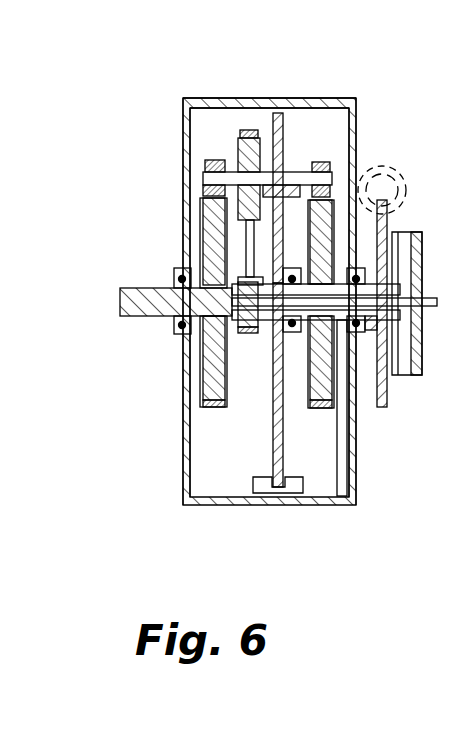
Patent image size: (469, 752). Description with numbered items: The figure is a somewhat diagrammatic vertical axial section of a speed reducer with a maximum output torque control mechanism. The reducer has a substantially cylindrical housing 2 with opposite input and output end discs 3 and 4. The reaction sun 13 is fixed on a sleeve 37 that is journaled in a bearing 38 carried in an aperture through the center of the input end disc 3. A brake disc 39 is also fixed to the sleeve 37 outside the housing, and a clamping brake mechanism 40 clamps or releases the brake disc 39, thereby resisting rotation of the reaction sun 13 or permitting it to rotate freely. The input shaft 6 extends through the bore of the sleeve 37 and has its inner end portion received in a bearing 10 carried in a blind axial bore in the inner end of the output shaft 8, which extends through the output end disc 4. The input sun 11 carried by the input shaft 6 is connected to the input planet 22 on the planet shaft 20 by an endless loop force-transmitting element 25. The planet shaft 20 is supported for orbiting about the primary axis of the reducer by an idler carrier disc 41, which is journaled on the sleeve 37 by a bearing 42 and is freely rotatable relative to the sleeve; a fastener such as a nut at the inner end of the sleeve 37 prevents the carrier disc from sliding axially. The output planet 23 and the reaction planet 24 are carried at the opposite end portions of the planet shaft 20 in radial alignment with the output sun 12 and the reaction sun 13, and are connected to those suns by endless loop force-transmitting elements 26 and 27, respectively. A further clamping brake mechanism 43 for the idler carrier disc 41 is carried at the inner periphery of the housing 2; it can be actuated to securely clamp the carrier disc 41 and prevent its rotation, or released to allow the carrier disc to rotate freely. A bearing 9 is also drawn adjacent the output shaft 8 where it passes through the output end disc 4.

The housing 2 is at (307, 94).
The input end disc 3 is at (352, 136).
The output end disc 4 is at (183, 122).
The input shaft 6 is at (438, 308).
The output shaft 8 is at (120, 310).
The bearing 9 is at (180, 324).
The bearing 10 is at (240, 327).
The input sun 11 is at (265, 337).
The output sun 12 is at (203, 376).
The reaction sun 13 is at (316, 392).
The planet shaft 20 is at (238, 160).
The input planet 22 is at (278, 154).
The output planet 23 is at (207, 166).
The reaction planet 24 is at (325, 166).
The endless loop force-transmitting element 25 is at (255, 132).
The endless loop force-transmitting element 26 is at (207, 197).
The endless loop force-transmitting element 27 is at (335, 425).
The sleeve 37 is at (393, 352).
The bearing 38 is at (364, 330).
The brake disc 39 is at (388, 228).
The clamping brake mechanism 40 is at (406, 178).
The idler carrier disc 41 is at (280, 128).
The bearing 42 is at (293, 265).
The clamping brake mechanism 43 is at (314, 488).